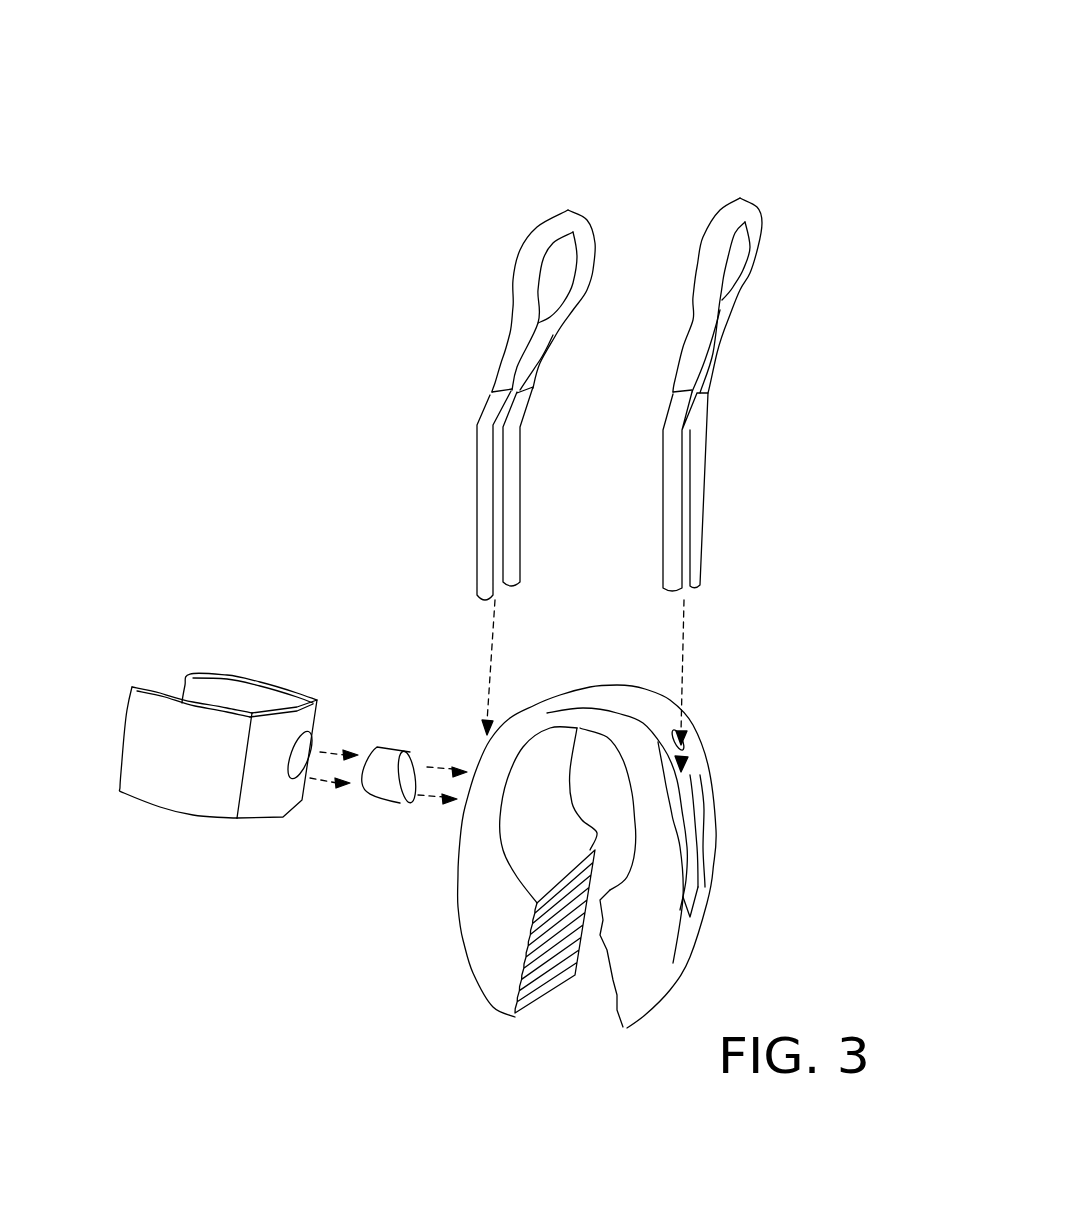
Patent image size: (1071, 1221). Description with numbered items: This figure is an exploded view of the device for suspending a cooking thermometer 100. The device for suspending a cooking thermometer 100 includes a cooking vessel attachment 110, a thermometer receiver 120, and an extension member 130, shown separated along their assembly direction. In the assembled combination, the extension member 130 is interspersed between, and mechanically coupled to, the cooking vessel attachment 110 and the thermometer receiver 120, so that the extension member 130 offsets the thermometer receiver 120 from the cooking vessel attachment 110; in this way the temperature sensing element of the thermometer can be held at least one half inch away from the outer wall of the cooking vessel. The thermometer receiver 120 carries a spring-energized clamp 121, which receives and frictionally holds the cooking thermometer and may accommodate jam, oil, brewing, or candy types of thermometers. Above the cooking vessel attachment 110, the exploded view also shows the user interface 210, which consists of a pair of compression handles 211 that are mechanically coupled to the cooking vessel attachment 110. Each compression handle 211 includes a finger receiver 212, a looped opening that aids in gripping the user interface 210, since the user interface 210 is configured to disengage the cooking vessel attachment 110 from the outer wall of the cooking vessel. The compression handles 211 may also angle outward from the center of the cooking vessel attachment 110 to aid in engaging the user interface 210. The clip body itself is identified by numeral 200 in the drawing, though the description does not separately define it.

The device for suspending a cooking thermometer 100 is at (682, 105).
The cooking vessel attachment 110 is at (657, 953).
The thermometer receiver 120 is at (210, 693).
The spring-energized clamp 121 is at (153, 750).
The extension member 130 is at (392, 760).
The clip body 200 is at (487, 937).
The user interface 210 is at (568, 215).
The compression handles 211 is at (531, 258).
The finger receiver 212 is at (552, 283).